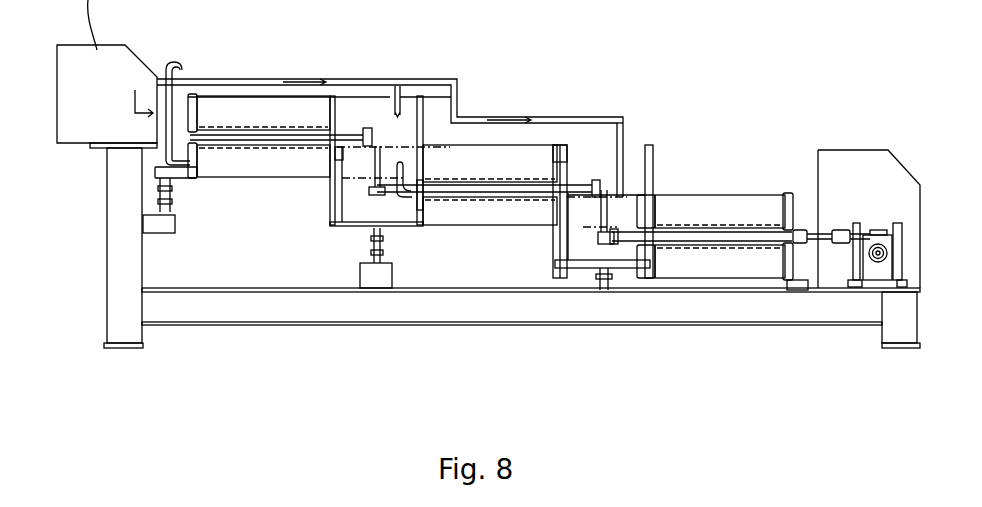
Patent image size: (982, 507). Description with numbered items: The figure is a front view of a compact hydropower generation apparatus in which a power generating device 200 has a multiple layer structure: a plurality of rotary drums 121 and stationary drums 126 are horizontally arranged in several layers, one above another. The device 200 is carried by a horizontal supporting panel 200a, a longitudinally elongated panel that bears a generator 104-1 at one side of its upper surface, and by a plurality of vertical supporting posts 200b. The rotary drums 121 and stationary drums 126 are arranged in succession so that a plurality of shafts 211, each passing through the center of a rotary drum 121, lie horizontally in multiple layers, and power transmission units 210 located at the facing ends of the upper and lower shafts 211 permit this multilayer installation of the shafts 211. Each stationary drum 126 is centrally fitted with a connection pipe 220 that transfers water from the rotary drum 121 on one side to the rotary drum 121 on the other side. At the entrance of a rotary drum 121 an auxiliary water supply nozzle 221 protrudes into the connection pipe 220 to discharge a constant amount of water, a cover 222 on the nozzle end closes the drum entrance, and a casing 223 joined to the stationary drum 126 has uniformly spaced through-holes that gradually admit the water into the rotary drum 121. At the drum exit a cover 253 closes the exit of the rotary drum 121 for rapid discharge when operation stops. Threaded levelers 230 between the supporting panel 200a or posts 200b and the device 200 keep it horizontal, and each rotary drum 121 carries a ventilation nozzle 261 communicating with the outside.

The generator 104-1 is at (845, 150).
The rotary drum 121 is at (257, 98).
The stationary drum 126 is at (360, 97).
The power generating device 200 is at (443, 80).
The horizontal supporting panel 200a is at (228, 325).
The vertical supporting post 200b is at (118, 248).
The power transmission unit 210 is at (357, 159).
The shaft 211 is at (470, 185).
The connection pipe 220 is at (350, 187).
The auxiliary water supply nozzle 221 is at (392, 195).
The cover 222 is at (408, 215).
The casing 223 is at (420, 213).
The leveler 230 is at (382, 255).
The cover 253 is at (580, 160).
The ventilation nozzle 261 is at (180, 62).